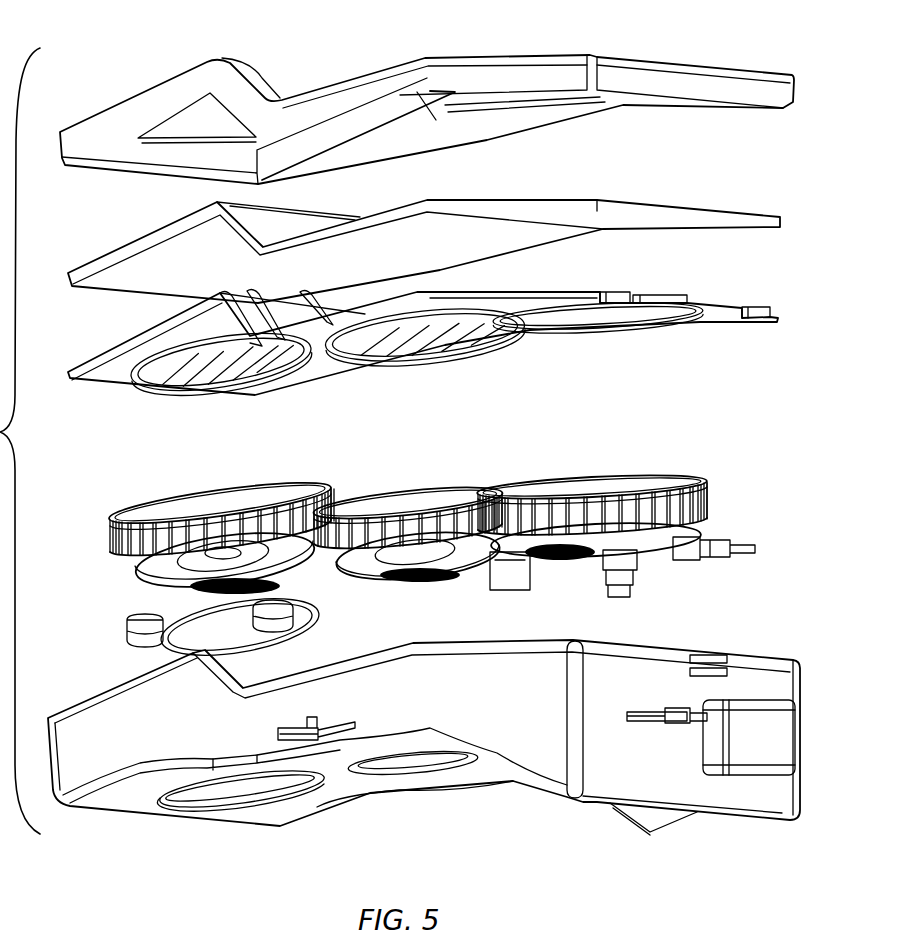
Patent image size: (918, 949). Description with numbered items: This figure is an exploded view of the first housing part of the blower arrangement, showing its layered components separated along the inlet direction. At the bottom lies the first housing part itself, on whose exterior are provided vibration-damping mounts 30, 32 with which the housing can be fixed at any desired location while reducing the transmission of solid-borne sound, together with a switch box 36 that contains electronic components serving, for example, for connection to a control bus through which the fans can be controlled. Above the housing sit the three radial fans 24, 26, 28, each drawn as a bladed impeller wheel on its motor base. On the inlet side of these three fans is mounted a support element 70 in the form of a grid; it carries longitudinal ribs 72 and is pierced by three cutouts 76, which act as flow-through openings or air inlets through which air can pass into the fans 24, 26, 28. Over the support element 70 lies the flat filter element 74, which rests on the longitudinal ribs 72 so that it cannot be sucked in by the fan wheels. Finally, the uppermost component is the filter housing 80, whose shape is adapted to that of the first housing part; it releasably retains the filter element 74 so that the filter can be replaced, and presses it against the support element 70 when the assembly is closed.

The filter housing 80 is at (477, 76).
The filter element 74 is at (657, 212).
The support element 70 is at (723, 294).
The longitudinal ribs 72 is at (683, 295).
The cutouts 76 is at (657, 323).
The radial fan 28 is at (249, 486).
The radial fan 26 is at (410, 484).
The radial fan 24 is at (602, 478).
The switch box 36 is at (752, 748).
The vibration-damping mount 30 is at (670, 727).
The vibration-damping mount 32 is at (310, 720).